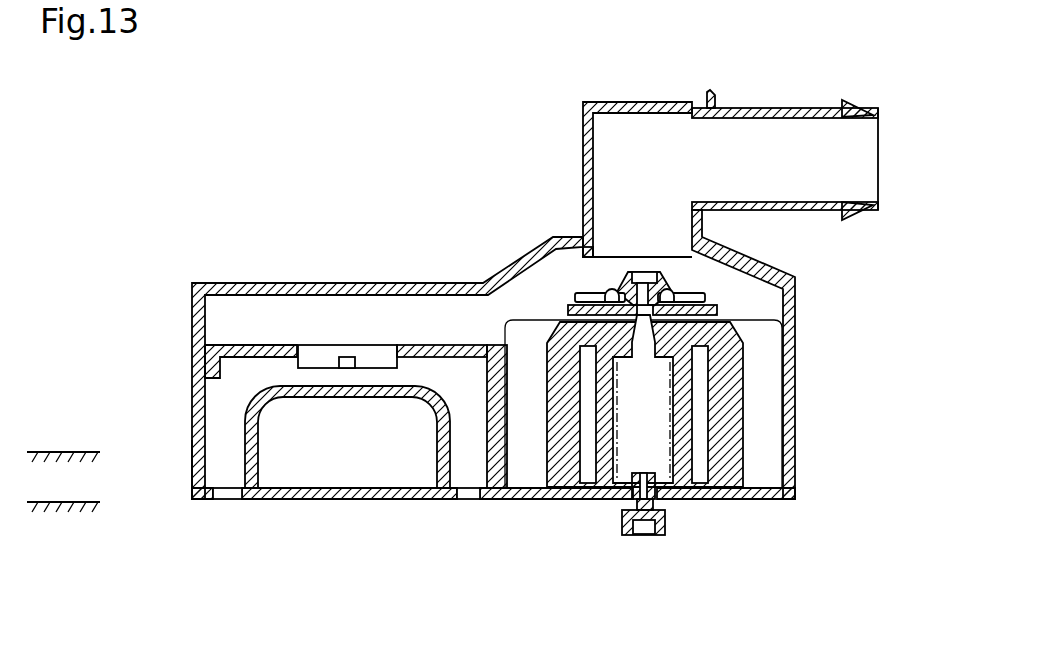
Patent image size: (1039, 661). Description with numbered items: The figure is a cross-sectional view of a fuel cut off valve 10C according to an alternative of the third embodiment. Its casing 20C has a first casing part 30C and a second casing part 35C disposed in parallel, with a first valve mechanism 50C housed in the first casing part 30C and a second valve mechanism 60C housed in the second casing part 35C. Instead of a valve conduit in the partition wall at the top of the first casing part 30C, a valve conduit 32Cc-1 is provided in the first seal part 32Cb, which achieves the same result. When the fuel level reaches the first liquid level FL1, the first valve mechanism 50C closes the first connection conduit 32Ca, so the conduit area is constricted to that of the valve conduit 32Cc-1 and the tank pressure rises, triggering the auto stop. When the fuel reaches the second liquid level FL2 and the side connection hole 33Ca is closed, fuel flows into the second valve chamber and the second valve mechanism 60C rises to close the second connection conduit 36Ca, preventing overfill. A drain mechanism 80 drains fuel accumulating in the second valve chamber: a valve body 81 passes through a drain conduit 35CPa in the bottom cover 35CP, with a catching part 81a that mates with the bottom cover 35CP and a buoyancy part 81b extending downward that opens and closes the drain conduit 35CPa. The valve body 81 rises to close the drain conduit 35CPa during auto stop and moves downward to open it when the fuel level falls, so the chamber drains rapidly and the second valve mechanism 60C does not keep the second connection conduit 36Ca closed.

The fuel cut off valve 10C is at (362, 190).
The casing 20C is at (235, 283).
The first casing part 30C is at (193, 373).
The first connection conduit 32Ca is at (328, 355).
The valve conduit 32Cc-1 is at (353, 357).
The first seal part 32Cb is at (405, 357).
The side connection hole 33Ca is at (193, 457).
The second connection conduit 36Ca is at (638, 240).
The first valve mechanism 50C is at (247, 432).
The second valve mechanism 60C is at (738, 312).
The second casing part 35C is at (795, 378).
The bottom cover 35CP is at (785, 497).
The drain conduit 35CPa is at (652, 502).
The drain mechanism 80 is at (817, 617).
The valve body 81 is at (520, 558).
The catching part 81a is at (633, 490).
The buoyancy part 81b is at (623, 525).
The first liquid level FL1 is at (85, 502).
The second liquid level FL2 is at (85, 452).